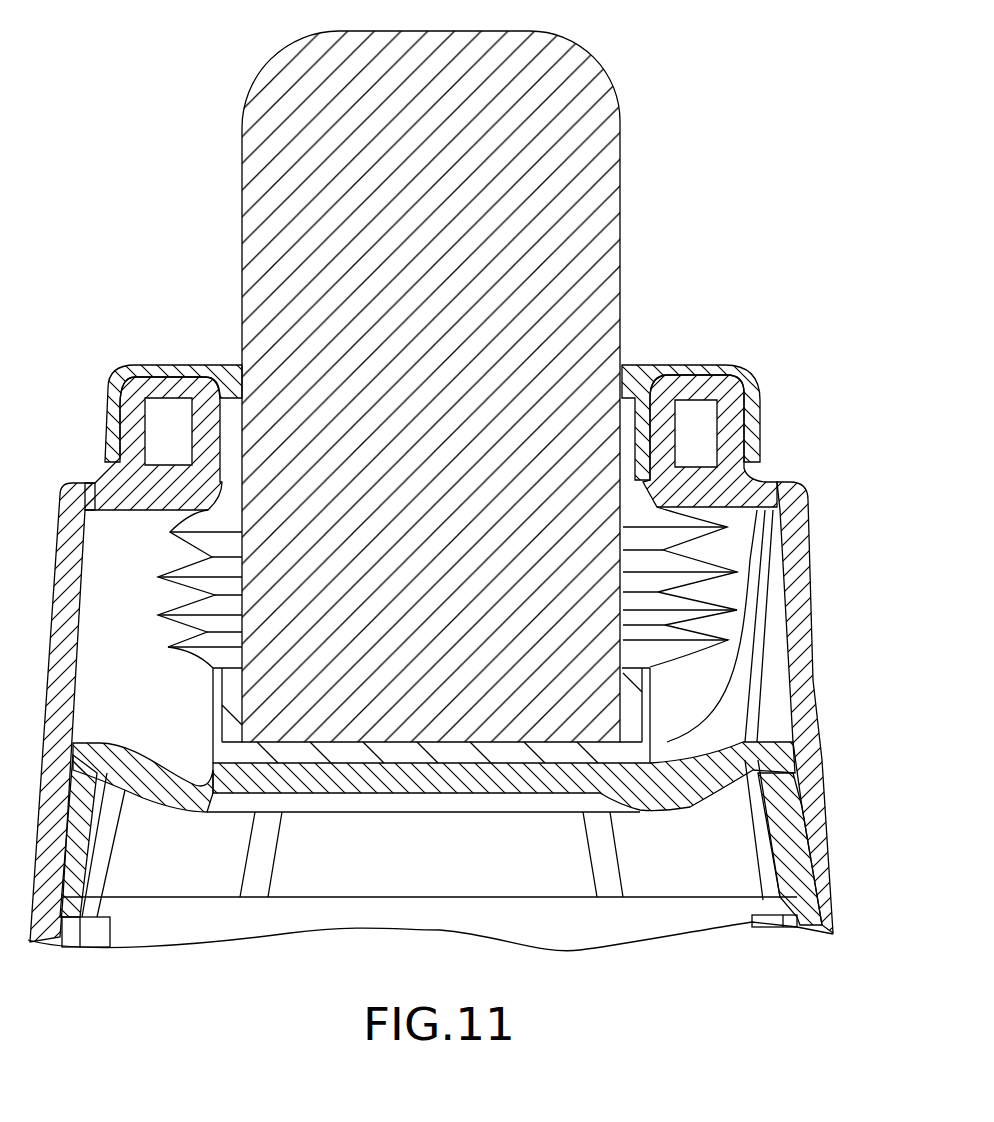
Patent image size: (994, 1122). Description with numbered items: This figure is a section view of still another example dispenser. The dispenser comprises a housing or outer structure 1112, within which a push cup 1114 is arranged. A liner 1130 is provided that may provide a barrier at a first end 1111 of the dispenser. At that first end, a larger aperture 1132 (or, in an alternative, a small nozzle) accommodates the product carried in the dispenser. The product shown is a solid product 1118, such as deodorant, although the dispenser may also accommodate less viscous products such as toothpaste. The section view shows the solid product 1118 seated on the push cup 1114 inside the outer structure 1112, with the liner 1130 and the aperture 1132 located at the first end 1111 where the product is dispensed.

The first end 1111 is at (133, 365).
The housing or outer structure 1112 is at (812, 640).
The push cup 1114 is at (795, 808).
The solid products 1118 is at (560, 153).
The liner 1130 is at (632, 396).
The larger aperture 1132 is at (228, 365).